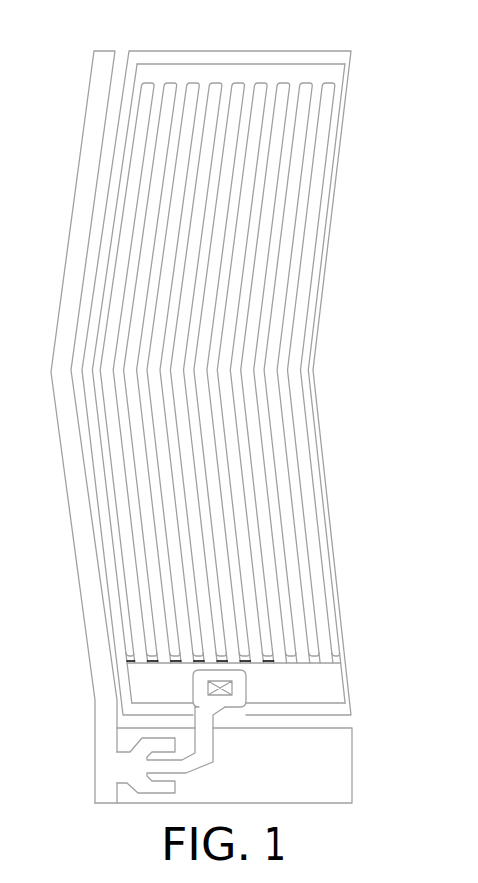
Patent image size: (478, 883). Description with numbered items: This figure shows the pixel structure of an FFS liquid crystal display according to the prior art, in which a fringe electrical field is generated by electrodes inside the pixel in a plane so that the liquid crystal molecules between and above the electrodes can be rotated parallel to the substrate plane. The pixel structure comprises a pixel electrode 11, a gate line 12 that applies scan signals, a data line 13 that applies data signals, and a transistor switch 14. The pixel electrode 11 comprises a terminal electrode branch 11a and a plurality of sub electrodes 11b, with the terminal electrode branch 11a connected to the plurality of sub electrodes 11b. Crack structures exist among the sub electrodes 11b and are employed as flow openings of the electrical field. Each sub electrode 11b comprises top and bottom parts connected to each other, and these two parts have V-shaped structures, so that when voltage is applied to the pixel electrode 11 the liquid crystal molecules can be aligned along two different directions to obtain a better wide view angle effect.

The pixel electrode 11 is at (261, 362).
The terminal electrode branch 11a is at (218, 73).
The sub electrodes 11b is at (323, 172).
The gate line 12 is at (325, 772).
The data line 13 is at (103, 109).
The transistor switch 14 is at (132, 758).